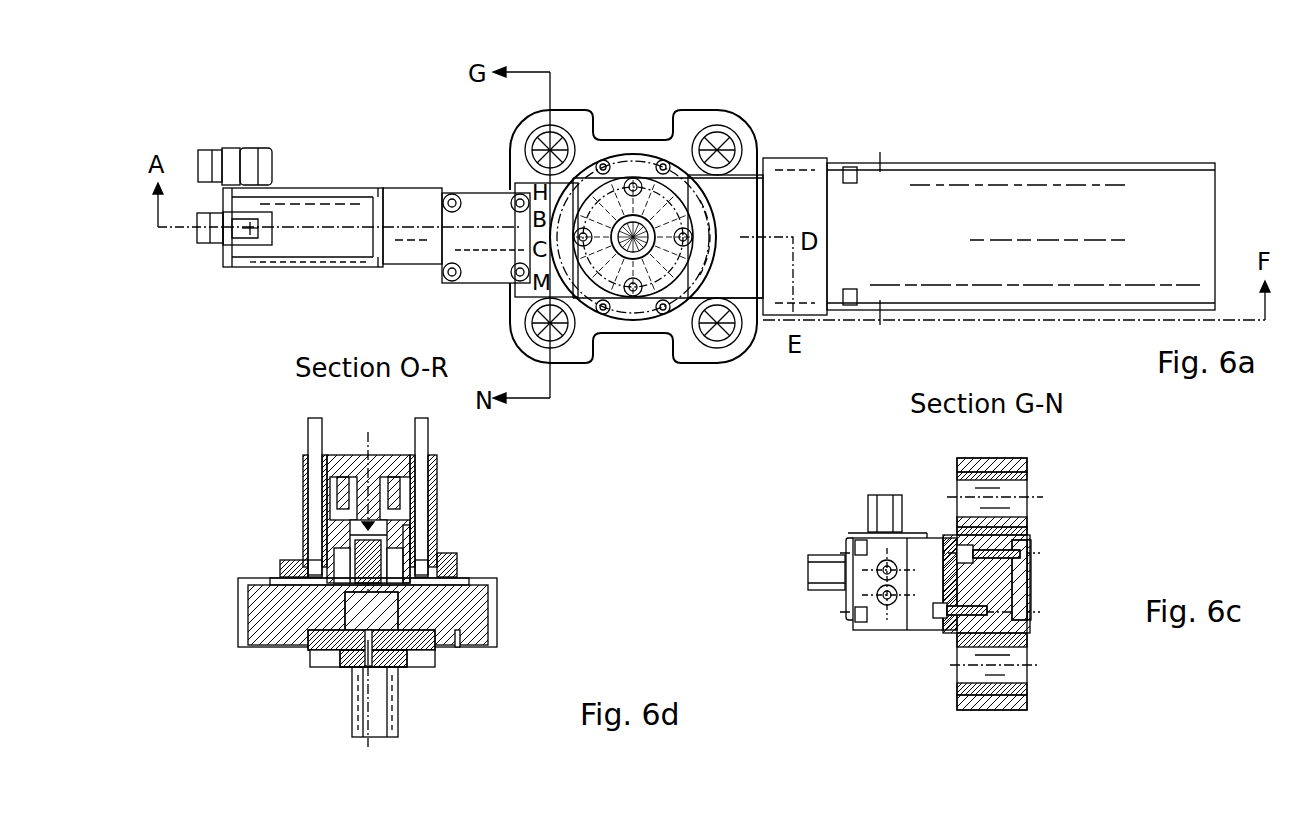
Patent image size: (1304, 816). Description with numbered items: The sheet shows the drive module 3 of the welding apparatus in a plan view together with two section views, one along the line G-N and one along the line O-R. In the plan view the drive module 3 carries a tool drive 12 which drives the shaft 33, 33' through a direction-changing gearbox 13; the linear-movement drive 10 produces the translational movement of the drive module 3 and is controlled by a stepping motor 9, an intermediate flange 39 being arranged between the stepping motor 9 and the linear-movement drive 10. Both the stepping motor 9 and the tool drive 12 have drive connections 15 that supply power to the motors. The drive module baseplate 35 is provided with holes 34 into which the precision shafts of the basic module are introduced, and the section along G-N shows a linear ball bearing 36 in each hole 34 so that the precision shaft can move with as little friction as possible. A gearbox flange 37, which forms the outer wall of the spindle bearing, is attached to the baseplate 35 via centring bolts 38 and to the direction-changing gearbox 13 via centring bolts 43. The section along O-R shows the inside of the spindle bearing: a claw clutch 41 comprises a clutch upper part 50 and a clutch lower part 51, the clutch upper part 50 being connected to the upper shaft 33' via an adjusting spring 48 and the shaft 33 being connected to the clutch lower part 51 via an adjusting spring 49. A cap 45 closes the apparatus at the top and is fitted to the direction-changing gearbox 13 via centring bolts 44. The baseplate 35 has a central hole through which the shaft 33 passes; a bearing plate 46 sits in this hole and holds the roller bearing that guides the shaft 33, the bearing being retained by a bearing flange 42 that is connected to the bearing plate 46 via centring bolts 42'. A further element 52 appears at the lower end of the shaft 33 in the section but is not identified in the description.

In FIG. 6A, the drive module 3 is at (806, 106).
In FIG. 6A, the stepping motor 9 is at (340, 213).
In FIG. 6C, the stepping motor 9 is at (863, 533).
In FIG. 6A, the linear-movement drive 10 is at (480, 267).
In FIG. 6C, the linear-movement drive 10 is at (877, 620).
In FIG. 6A, the tool drive 12 is at (985, 190).
In FIG. 6A, the direction-changing gearbox 13 is at (763, 303).
In FIG. 6A, the drive connections 15 is at (253, 160).
In FIG. 6C, the drive connections 15 is at (882, 493).
In FIG. 6D, the shaft 33 is at (342, 631).
In FIG. 6D, the shaft 33' is at (331, 493).
In FIG. 6A, the holes 34 is at (745, 197).
In FIG. 6C, the holes 34 is at (1030, 513).
In FIG. 6A, the drive module baseplate 35 is at (717, 352).
In FIG. 6D, the drive module baseplate 35 is at (463, 607).
In FIG. 6C, the drive module baseplate 35 is at (1007, 458).
In FIG. 6C, the linear ball bearing 36 is at (1027, 472).
In FIG. 6A, the gearbox flange 37 is at (640, 308).
In FIG. 6D, the gearbox flange 37 is at (433, 500).
In FIG. 6C, the gearbox flange 37 is at (950, 630).
In FIG. 6A, the centring bolts 38 is at (630, 308).
In FIG. 6D, the centring bolts 38 is at (438, 553).
In FIG. 6C, the centring bolts 38 is at (930, 613).
In FIG. 6A, the intermediate flange 39 is at (410, 210).
In FIG. 6D, the claw clutch 41 is at (323, 522).
In FIG. 6D, the bearing flange 42 is at (398, 678).
In FIG. 6D, the centring bolts 42' is at (341, 681).
In FIG. 6D, the centring bolts 43 is at (417, 440).
In FIG. 6A, the centring bolts 44 is at (633, 183).
In FIG. 6A, the cap 45 is at (668, 162).
In FIG. 6D, the bearing plate 46 is at (302, 647).
In FIG. 6D, the adjusting spring 48 is at (393, 493).
In FIG. 6D, the adjusting spring 49 is at (420, 533).
In FIG. 6D, the clutch upper part 50 is at (317, 497).
In FIG. 6D, the clutch lower part 51 is at (298, 563).
In FIG. 6D, the pin 52 is at (357, 720).